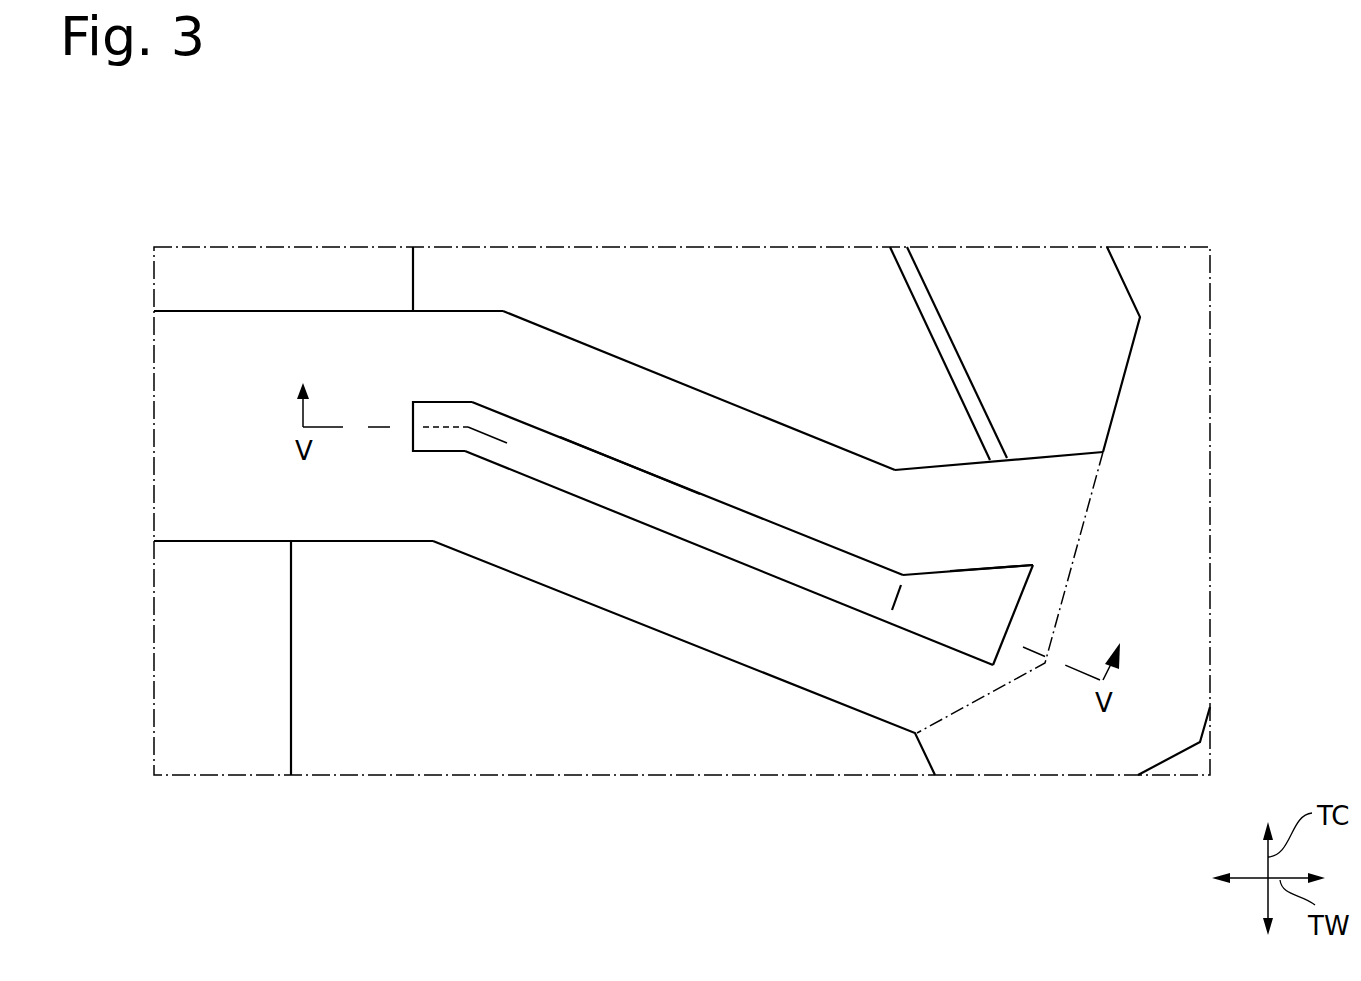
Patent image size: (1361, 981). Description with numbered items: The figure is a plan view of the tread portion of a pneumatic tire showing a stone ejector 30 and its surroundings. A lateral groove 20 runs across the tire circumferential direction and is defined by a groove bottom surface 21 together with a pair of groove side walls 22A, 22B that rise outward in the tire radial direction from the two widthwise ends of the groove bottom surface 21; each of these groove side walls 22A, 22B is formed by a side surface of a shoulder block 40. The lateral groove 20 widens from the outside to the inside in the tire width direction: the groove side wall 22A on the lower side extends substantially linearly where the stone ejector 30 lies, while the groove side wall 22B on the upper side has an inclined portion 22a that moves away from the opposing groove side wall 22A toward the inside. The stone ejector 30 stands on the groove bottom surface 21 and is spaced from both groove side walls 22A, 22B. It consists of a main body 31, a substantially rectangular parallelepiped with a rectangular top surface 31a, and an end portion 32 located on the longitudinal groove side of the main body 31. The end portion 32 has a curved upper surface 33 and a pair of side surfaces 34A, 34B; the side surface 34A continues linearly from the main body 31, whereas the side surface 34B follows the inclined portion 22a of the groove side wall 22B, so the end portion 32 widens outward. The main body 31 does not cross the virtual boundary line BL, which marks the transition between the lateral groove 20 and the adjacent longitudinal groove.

The lateral groove 20 is at (682, 658).
The groove bottom surface 21 is at (643, 582).
The groove side wall 22A is at (670, 636).
The groove side wall 22B is at (728, 406).
The inclined portion 22a is at (1060, 466).
The stone ejector 30 is at (748, 554).
The main body 31 is at (758, 510).
The top surface 31a is at (672, 492).
The end portion 32 is at (958, 565).
The upper surface 33 is at (1000, 593).
The side surface 34A is at (937, 640).
The side surface 34B is at (993, 565).
The shoulder block 40 is at (828, 270).
The virtual boundary line BL is at (1088, 520).